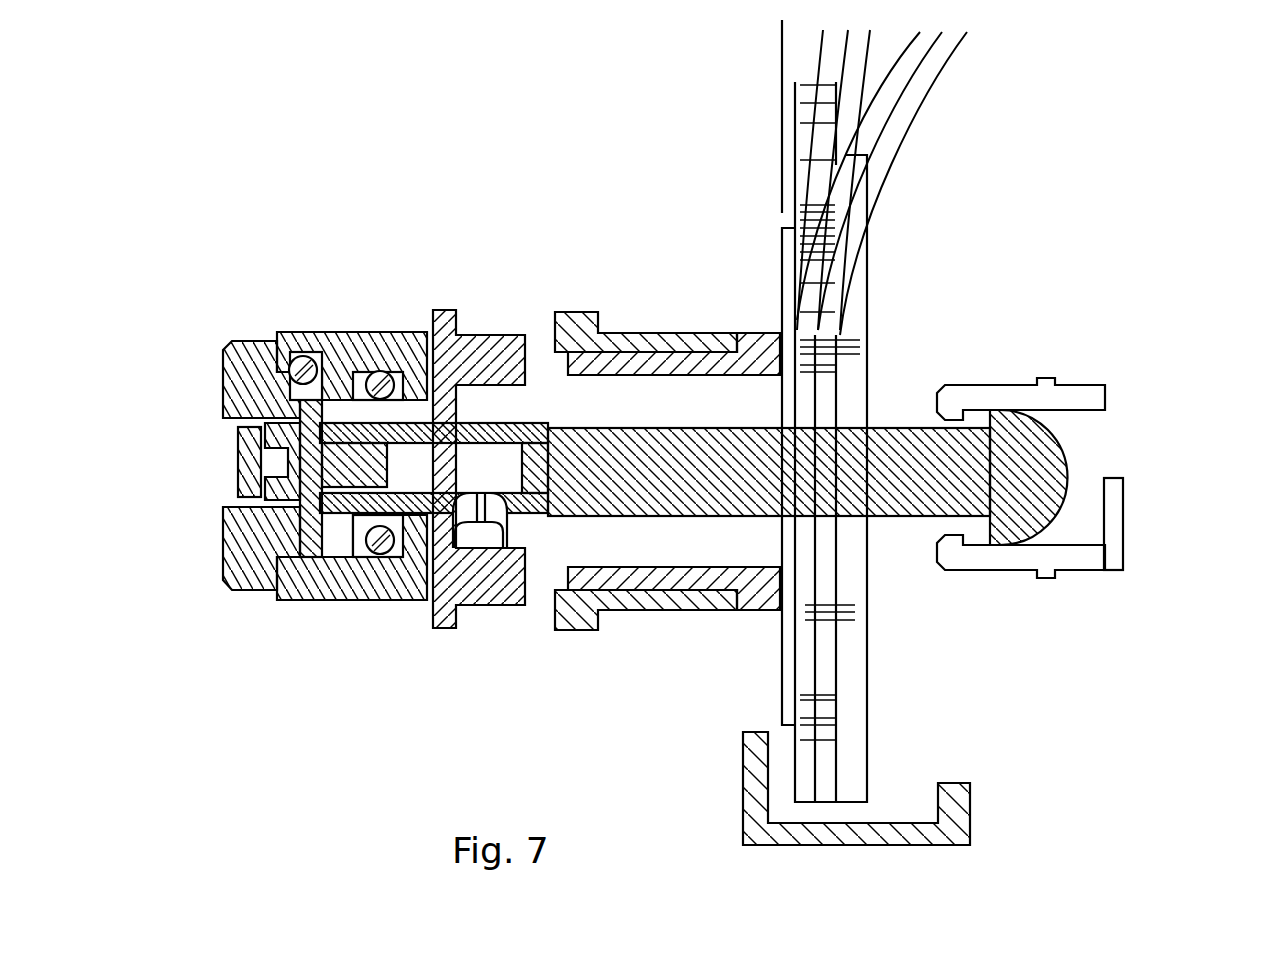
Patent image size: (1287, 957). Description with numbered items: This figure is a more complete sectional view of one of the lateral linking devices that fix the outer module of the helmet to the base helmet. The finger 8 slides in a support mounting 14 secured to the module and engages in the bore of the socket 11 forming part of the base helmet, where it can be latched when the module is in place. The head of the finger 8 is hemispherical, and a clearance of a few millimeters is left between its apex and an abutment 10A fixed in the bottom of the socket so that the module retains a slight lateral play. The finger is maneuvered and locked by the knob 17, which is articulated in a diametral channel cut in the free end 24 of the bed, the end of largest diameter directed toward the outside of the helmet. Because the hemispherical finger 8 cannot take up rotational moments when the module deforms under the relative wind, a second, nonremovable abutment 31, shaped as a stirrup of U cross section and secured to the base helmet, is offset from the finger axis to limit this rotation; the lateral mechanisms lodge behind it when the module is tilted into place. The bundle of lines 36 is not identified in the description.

The finger 8 is at (1067, 467).
The abutment 10A is at (1118, 522).
The socket 11 is at (640, 630).
The support mounting 14 is at (1007, 562).
The knob 17 is at (227, 550).
The free end of the bed 24 is at (227, 373).
The abutment 31 is at (838, 848).
The optical fibers 36 is at (925, 100).